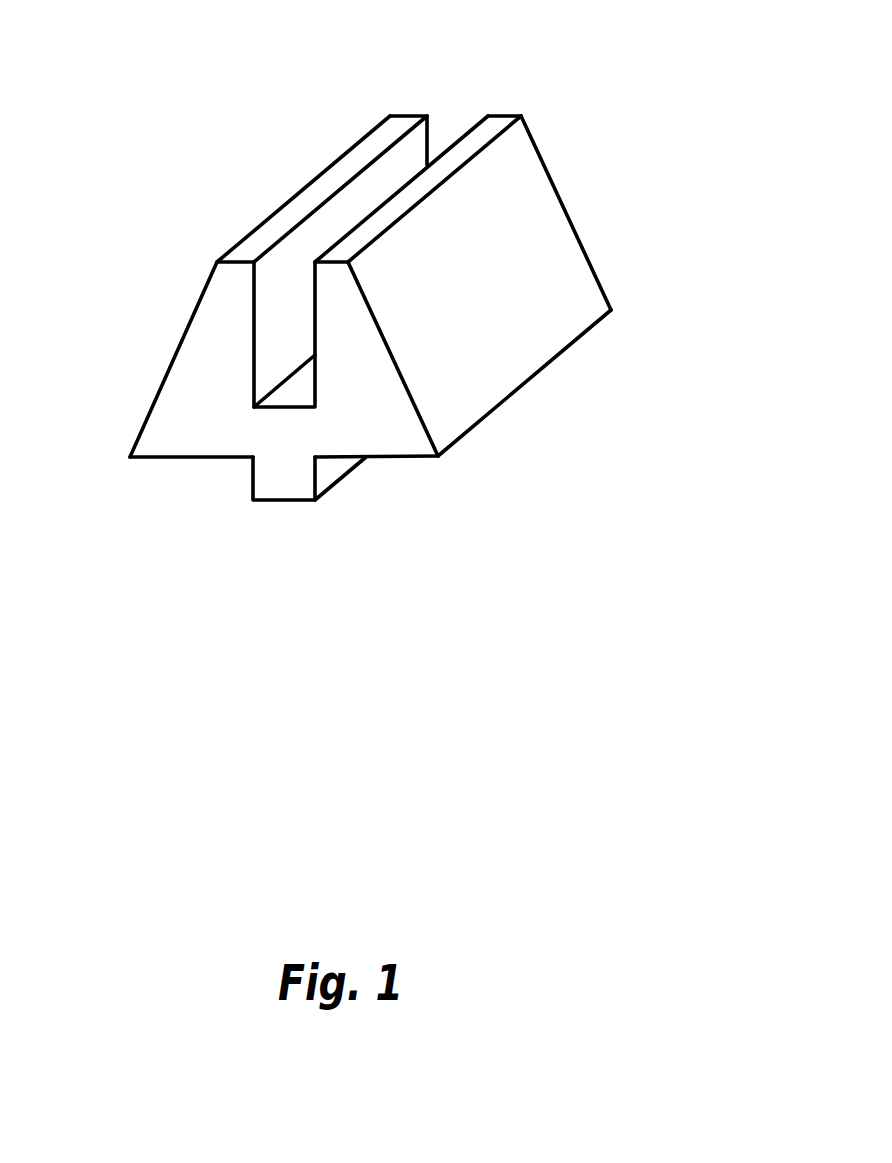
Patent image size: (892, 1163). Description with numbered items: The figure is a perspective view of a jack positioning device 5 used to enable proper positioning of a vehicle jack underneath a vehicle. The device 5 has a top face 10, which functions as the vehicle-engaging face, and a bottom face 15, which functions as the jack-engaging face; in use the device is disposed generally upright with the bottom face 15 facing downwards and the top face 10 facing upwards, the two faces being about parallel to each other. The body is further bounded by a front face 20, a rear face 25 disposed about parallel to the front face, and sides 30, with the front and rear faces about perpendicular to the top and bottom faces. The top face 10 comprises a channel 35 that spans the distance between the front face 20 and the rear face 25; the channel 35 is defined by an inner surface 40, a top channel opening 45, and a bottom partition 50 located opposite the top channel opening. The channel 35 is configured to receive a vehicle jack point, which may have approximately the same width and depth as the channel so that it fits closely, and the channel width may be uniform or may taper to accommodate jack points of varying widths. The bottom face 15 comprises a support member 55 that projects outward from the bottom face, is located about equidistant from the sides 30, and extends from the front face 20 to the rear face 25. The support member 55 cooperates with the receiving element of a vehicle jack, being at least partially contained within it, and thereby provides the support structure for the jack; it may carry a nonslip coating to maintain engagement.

The jack positioning device 5 is at (586, 96).
The top face 10 is at (398, 127).
The bottom face 15 is at (195, 459).
The front face 20 is at (344, 400).
The rear face 25 is at (563, 195).
The sides 30 is at (465, 285).
The channel 35 is at (348, 208).
The inner surface 40 is at (270, 282).
The top channel opening 45 is at (486, 113).
The bottom partition 50 is at (282, 398).
The support member 55 is at (282, 503).